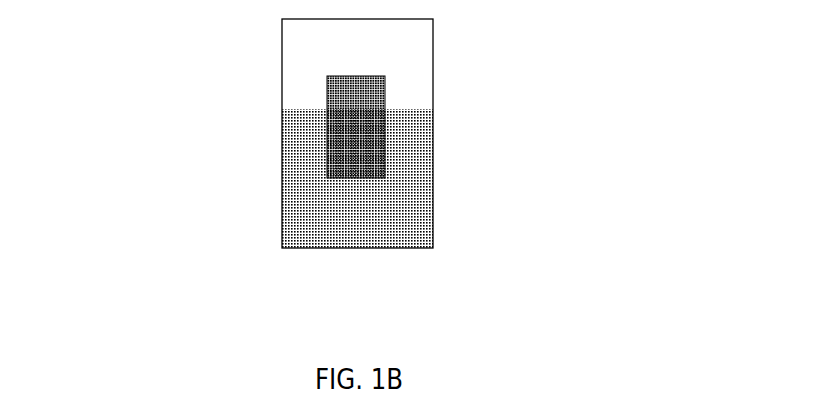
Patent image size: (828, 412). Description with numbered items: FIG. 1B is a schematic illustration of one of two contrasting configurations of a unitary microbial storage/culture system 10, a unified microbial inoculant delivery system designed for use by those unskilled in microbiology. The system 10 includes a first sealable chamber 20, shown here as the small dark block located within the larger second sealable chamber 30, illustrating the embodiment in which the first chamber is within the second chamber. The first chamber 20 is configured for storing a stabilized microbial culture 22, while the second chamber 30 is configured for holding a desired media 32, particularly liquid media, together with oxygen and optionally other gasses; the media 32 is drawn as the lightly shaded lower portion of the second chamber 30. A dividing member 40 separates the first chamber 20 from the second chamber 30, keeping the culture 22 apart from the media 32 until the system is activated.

The unitary microbial storage/culture system 10 is at (190, 67).
The first sealable chamber 20 is at (387, 87).
The stabilized microbial culture 22 is at (385, 143).
The second sealable chamber 30 is at (436, 173).
The media 32 is at (408, 218).
The dividing member 40 is at (328, 128).